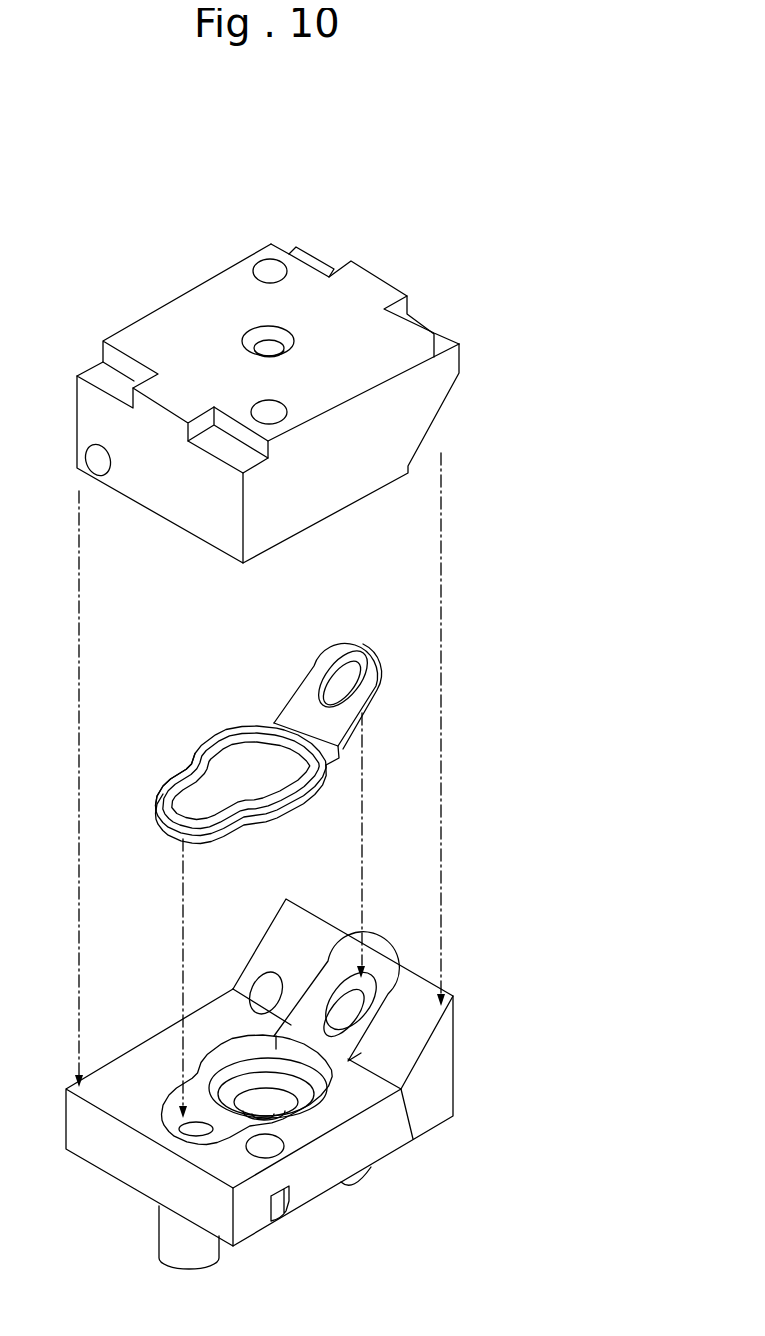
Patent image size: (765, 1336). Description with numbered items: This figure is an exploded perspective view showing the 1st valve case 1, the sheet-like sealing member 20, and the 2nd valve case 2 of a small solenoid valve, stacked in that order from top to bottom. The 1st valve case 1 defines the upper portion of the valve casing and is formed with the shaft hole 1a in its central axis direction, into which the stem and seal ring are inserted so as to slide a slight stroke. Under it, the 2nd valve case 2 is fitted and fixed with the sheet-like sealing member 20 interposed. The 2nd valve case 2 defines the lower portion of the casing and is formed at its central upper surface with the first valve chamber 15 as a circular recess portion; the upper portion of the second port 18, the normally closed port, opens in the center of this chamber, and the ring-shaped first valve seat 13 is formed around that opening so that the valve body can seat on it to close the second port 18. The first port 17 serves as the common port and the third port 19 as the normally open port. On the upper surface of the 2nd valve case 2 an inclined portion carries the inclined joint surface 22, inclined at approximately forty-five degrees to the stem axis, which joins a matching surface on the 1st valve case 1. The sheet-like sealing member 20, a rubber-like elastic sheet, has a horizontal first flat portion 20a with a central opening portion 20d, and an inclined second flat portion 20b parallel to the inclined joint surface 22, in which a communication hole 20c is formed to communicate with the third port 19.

The 1st valve case 1 is at (268, 382).
The shaft hole 1a is at (263, 338).
The 2nd valve case 2 is at (318, 1075).
The first valve seat 13 is at (287, 1110).
The first valve chamber 15 is at (220, 1120).
The first port 17 is at (197, 1128).
The second port 18 is at (260, 1113).
The third port 19 is at (345, 1003).
The sheet-like sealing member 20 is at (237, 721).
The first flat portion 20a is at (195, 747).
The second flat portion 20b is at (333, 648).
The communication hole 20c is at (332, 685).
The opening portion 20d is at (261, 775).
The inclined joint surface 22 is at (418, 1034).